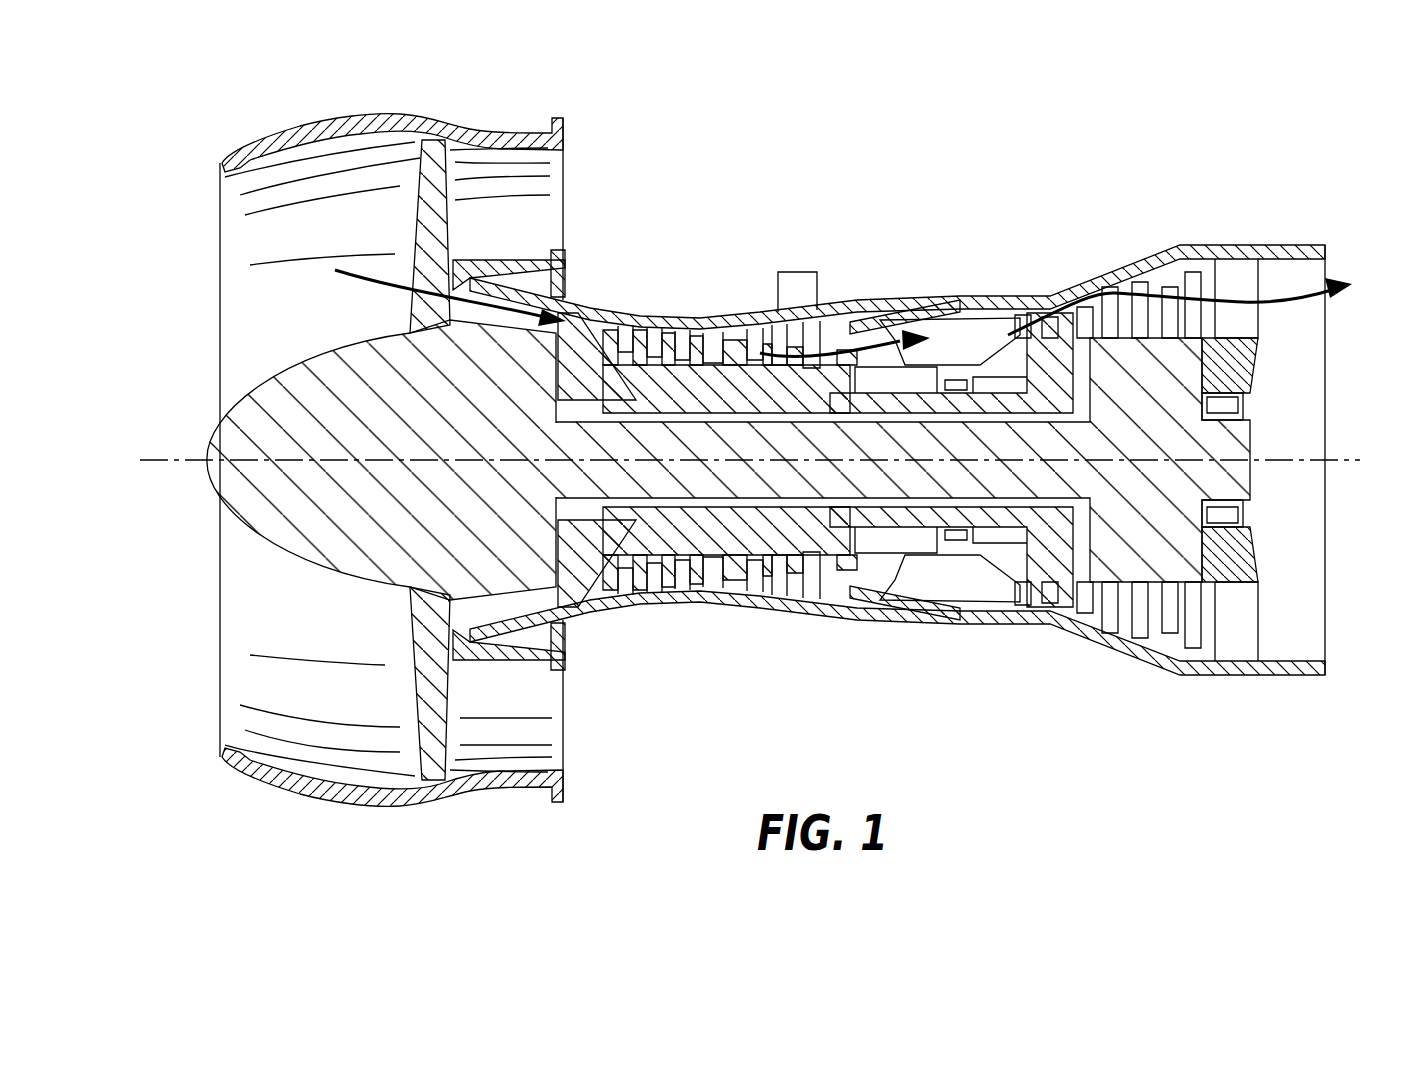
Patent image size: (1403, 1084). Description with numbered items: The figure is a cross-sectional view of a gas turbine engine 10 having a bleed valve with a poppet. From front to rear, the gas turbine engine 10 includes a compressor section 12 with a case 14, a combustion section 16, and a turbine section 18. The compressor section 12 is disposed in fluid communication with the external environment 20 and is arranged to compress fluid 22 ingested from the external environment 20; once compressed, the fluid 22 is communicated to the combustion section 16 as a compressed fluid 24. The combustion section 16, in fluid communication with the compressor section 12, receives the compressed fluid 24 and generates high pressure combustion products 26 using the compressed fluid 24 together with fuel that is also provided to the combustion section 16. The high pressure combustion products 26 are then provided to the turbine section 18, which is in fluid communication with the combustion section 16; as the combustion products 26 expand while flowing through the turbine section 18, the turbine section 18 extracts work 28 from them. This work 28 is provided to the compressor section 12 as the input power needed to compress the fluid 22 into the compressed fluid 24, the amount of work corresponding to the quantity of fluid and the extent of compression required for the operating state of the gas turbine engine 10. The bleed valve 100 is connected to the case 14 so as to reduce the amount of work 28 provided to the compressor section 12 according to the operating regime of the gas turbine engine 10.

The gas turbine engine 10 is at (335, 886).
The external environment 20 is at (147, 68).
The compressor section 12 is at (460, 227).
The case 14 is at (660, 603).
The combustion section 16 is at (1022, 227).
The turbine section 18 is at (1025, 227).
The fluid 22 is at (375, 268).
The compressed fluid 24 is at (850, 352).
The high pressure combustion products 26 is at (1285, 305).
The work 28 is at (178, 421).
The bleed valve 100 is at (765, 268).